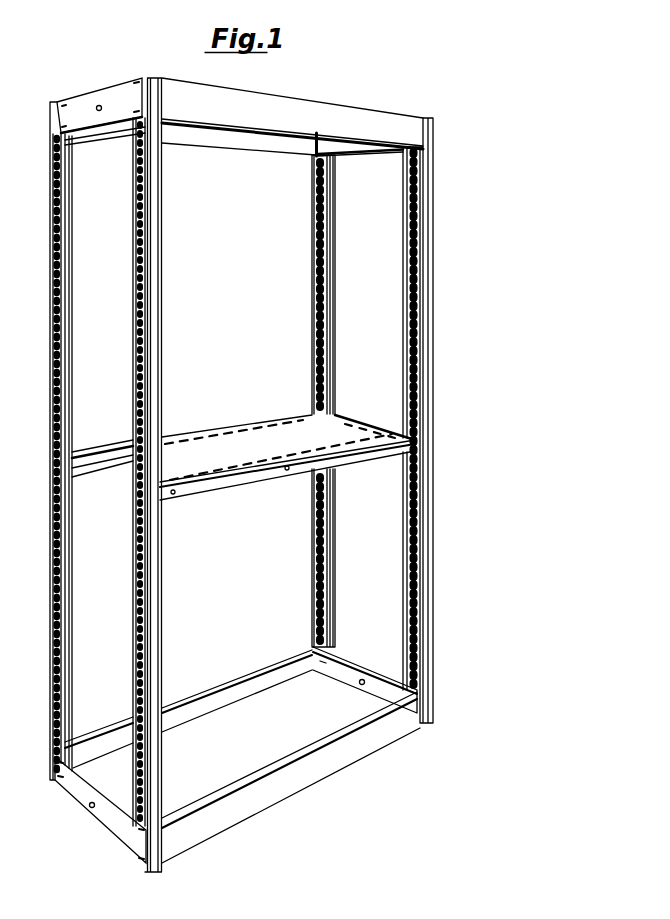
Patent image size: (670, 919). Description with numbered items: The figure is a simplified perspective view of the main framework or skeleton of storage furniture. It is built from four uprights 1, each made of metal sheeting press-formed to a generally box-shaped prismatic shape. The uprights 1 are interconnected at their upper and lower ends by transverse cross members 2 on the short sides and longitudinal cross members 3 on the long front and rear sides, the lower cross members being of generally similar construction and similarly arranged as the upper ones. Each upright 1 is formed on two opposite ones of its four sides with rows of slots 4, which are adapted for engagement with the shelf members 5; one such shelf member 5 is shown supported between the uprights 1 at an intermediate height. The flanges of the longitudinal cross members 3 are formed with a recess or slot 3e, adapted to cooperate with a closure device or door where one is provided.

The uprights 1 is at (322, 336).
The transverse cross members 2 is at (103, 97).
The longitudinal cross members 3 is at (287, 117).
The recess or slot 3e is at (314, 137).
The slots 4 is at (413, 200).
The shelf members 5 is at (338, 430).